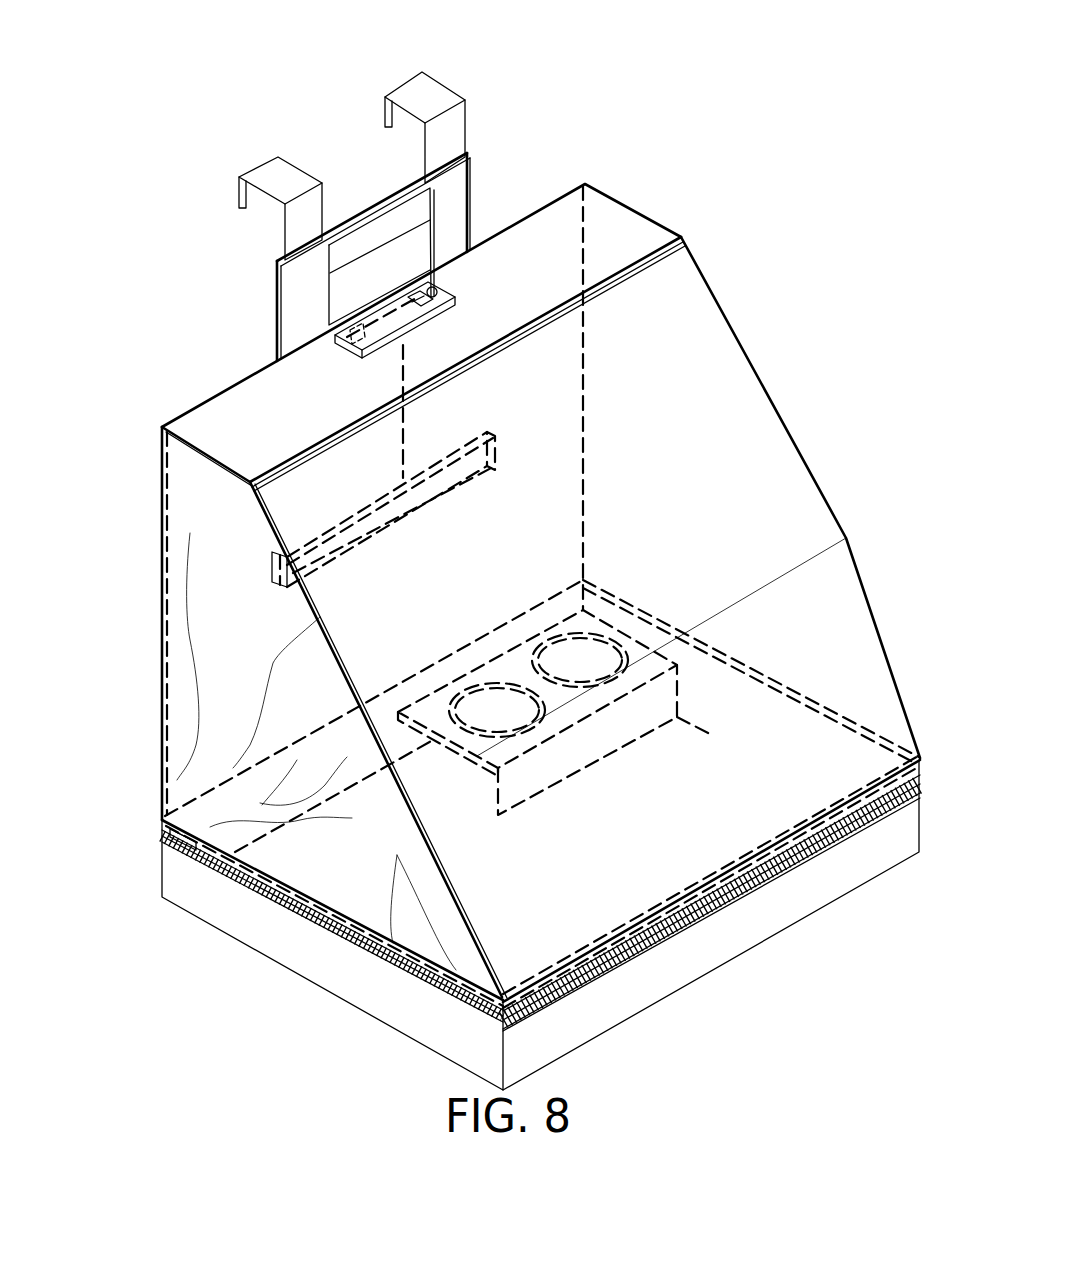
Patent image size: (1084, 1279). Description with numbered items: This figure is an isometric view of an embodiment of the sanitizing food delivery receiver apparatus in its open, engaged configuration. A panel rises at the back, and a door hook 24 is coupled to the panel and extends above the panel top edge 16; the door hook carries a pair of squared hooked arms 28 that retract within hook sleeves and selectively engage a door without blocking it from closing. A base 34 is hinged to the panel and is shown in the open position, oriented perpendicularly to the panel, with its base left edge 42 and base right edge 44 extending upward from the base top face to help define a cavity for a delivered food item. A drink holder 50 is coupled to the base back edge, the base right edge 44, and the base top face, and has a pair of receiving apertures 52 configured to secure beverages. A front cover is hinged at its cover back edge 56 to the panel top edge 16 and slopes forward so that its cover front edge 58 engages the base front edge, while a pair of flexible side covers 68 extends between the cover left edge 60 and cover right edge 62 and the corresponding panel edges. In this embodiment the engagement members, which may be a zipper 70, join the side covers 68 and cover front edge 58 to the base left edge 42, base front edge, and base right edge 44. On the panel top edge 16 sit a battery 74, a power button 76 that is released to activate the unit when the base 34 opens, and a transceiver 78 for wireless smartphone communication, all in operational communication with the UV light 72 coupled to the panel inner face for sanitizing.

The panel top edge 16 is at (613, 217).
The door hook 24 is at (312, 296).
The hooked arms 28 is at (418, 88).
The base 34 is at (715, 940).
The base left edge 42 is at (288, 940).
The base right edge 44 is at (797, 733).
The drink holder 50 is at (660, 700).
The receiving apertures 52 is at (505, 688).
The cover back edge 56 is at (681, 237).
The cover front edge 58 is at (848, 792).
The cover left edge 60 is at (347, 670).
The cover right edge 62 is at (827, 497).
The side covers 68 is at (208, 730).
The zipper 70 is at (866, 812).
The UV light 72 is at (500, 438).
The battery 74 is at (375, 338).
The power button 76 is at (435, 287).
The transceiver 78 is at (418, 290).